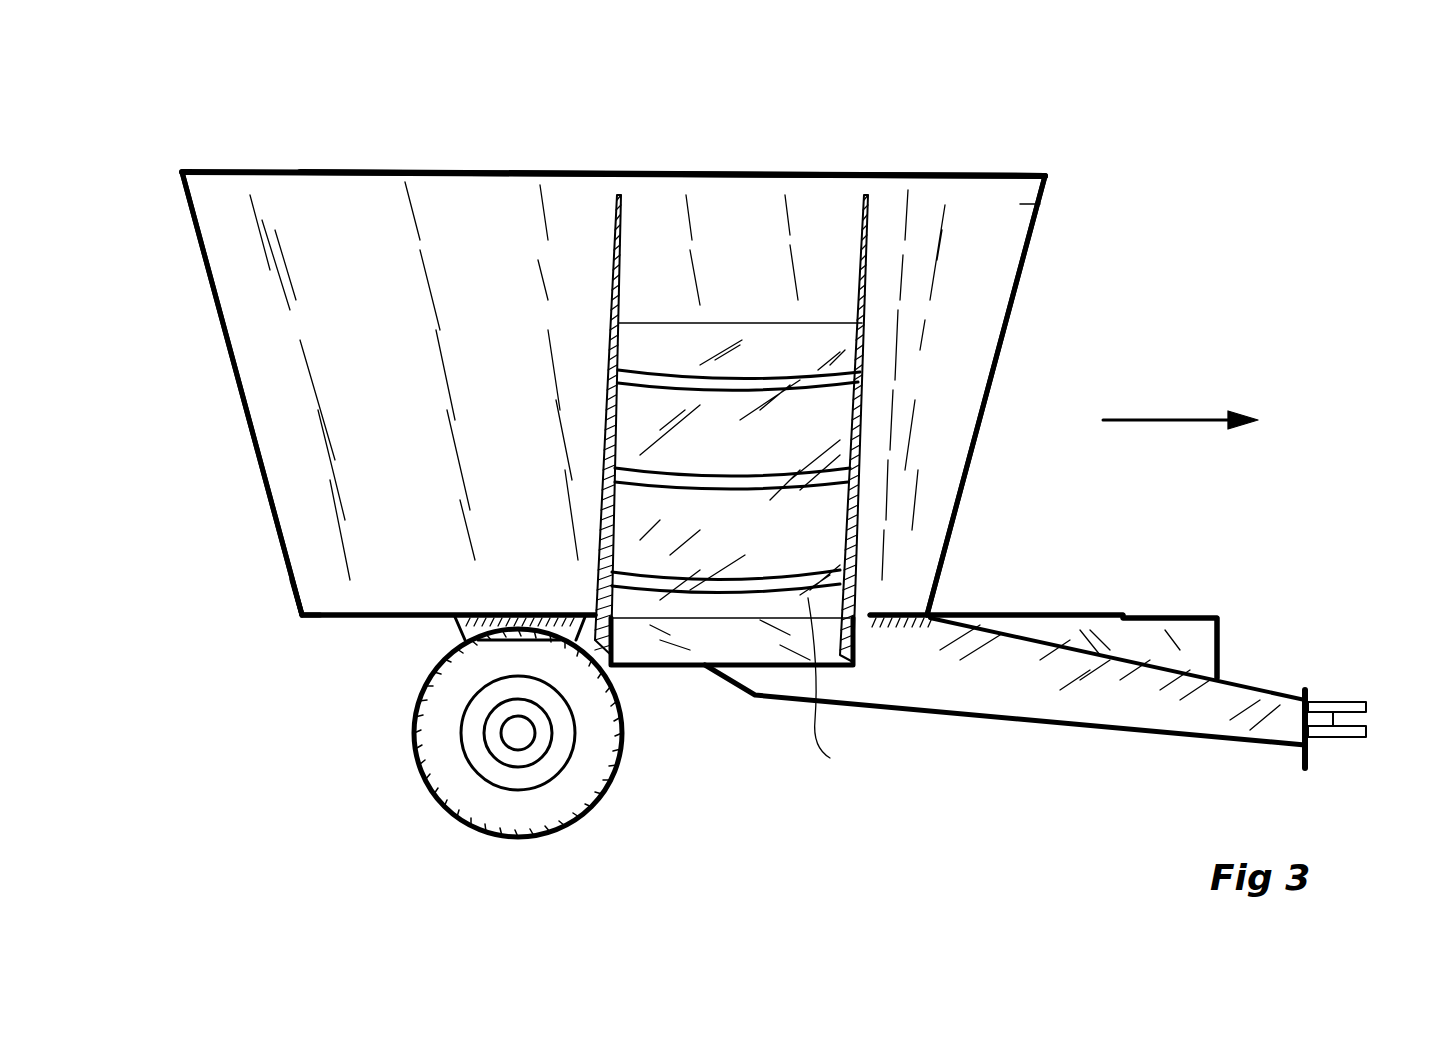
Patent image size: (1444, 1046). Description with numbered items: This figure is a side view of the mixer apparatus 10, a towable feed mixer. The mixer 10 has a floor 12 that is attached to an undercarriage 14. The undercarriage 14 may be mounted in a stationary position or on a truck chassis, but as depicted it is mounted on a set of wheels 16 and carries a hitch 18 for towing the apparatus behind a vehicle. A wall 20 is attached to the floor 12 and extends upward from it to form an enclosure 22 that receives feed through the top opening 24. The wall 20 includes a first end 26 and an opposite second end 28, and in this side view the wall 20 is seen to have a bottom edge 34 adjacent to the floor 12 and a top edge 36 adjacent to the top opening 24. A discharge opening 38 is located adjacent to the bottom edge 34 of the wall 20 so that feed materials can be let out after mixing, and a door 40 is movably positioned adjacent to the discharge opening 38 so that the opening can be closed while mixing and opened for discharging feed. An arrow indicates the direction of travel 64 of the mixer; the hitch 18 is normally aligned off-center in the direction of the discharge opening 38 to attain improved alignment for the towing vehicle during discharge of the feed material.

The mixer apparatus 10 is at (452, 155).
The floor 12 is at (905, 613).
The undercarriage 14 is at (1025, 705).
The wheels 16 is at (548, 810).
The hitch 18 is at (1333, 700).
The wall 20 is at (1020, 204).
The enclosure 22 is at (972, 250).
The top opening 24 is at (905, 170).
The first end 26 is at (1013, 316).
The second end 28 is at (215, 318).
The bottom edge 34 is at (318, 613).
The top edge 36 is at (690, 167).
The discharge opening 38 is at (705, 625).
The door 40 is at (843, 689).
The direction of travel 64 is at (1209, 424).